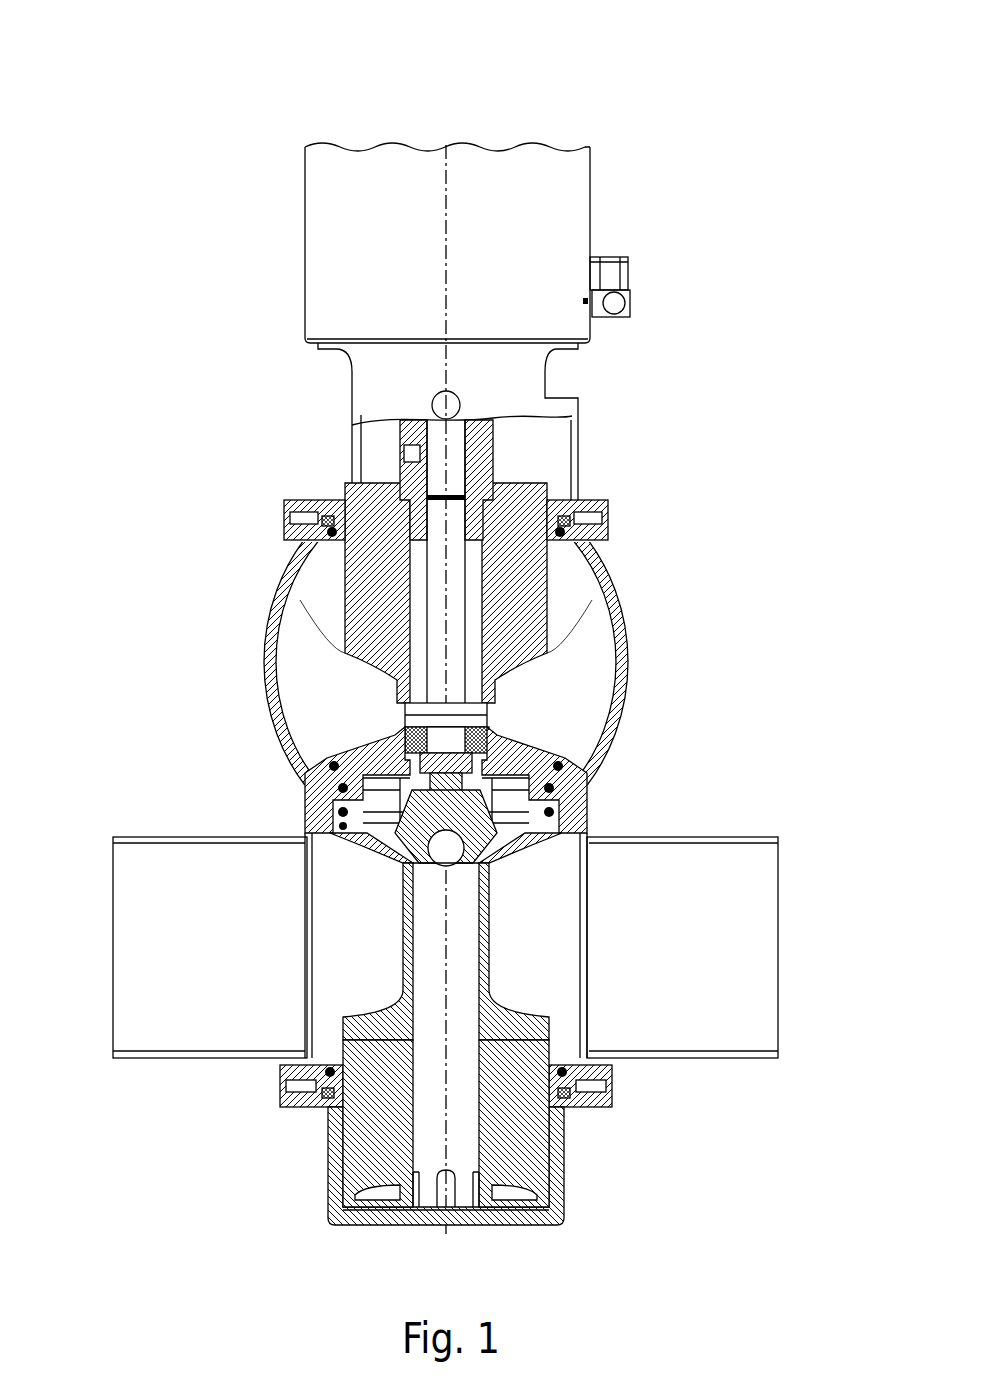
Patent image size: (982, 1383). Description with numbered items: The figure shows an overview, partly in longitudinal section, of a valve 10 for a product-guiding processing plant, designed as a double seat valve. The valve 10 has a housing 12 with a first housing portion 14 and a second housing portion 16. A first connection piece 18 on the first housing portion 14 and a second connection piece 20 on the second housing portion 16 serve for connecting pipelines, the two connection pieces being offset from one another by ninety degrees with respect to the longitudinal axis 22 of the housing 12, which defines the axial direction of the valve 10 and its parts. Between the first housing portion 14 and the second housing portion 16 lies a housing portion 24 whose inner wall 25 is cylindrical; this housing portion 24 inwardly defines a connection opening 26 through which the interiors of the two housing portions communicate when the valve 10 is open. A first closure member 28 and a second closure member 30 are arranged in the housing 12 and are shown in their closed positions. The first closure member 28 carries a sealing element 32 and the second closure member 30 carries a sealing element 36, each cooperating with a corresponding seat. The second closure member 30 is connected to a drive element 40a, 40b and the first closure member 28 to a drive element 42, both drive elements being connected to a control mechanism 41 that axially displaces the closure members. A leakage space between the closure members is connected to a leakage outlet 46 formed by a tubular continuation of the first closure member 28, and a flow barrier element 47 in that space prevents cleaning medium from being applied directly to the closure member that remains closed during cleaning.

The valve 10 is at (767, 140).
The housing 12 is at (695, 637).
The first housing portion 14 is at (621, 683).
The second housing portion 16 is at (307, 998).
The first connection piece 18 is at (358, 682).
The second connection piece 20 is at (150, 838).
The longitudinal axis 22 is at (447, 272).
The housing portion 24 is at (560, 793).
The inner wall 25 is at (555, 805).
The connection opening 26 is at (363, 837).
The first closure member 28 is at (540, 852).
The second closure member 30 is at (340, 752).
The sealing element 32 is at (330, 834).
The sealing element 36 is at (328, 792).
The drive element 40a is at (360, 582).
The drive element 40b is at (400, 426).
The control mechanism 41 is at (332, 198).
The drive element 42 is at (455, 462).
The leakage outlet 46 is at (430, 1148).
The flow barrier element 47 is at (540, 770).